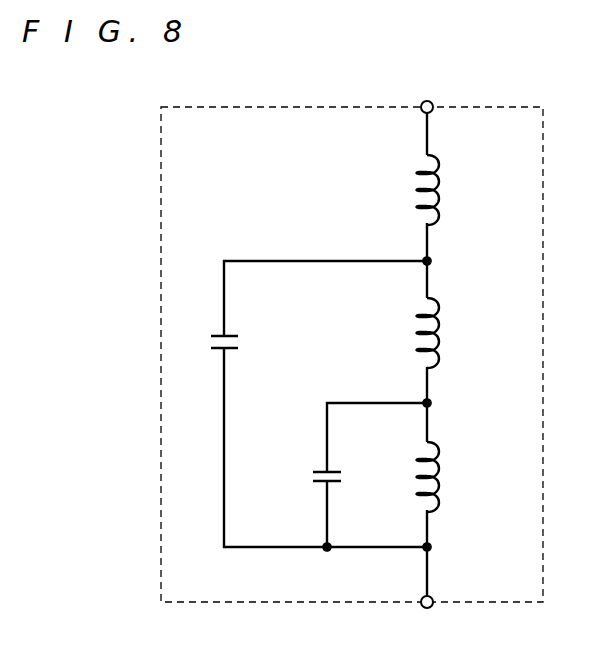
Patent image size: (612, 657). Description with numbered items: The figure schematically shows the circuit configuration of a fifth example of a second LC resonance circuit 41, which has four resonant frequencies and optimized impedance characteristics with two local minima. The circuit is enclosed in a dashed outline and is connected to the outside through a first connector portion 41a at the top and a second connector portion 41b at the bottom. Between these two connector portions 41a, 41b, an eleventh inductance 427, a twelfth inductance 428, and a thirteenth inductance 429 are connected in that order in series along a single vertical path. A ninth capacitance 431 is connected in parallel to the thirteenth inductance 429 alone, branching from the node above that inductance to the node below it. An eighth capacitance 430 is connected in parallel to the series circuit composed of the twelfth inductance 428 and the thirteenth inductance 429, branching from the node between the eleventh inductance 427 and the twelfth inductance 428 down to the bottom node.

The second LC resonance circuit 41 is at (502, 107).
The first connector portion 41a is at (428, 100).
The second connector portion 41b is at (428, 609).
The eleventh inductance 427 is at (440, 168).
The twelfth inductance 428 is at (440, 312).
The thirteenth inductance 429 is at (440, 456).
The eighth capacitance 430 is at (240, 343).
The ninth capacitance 431 is at (342, 477).